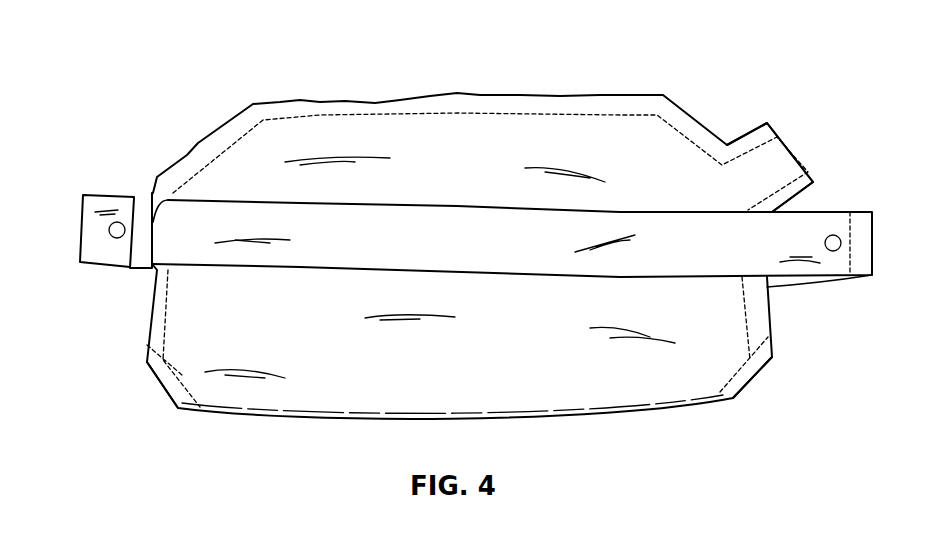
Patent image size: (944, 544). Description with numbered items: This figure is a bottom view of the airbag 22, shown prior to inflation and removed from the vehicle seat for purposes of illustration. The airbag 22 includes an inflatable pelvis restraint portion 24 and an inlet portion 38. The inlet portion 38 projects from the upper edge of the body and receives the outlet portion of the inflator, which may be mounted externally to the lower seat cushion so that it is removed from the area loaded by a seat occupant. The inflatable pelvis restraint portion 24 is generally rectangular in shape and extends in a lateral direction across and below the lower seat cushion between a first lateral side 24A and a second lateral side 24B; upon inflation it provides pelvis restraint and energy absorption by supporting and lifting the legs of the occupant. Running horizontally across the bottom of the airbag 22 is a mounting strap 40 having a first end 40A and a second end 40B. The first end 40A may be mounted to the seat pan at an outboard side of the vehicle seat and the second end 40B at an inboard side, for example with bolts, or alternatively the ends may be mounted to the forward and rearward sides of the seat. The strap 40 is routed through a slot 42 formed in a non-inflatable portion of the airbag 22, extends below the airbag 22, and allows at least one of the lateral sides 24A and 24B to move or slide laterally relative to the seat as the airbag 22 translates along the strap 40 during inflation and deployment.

The airbag 22 is at (222, 62).
The inflatable pelvis restraint portion 24 is at (314, 98).
The first lateral side 24A is at (728, 400).
The second lateral side 24B is at (160, 380).
The inlet portion 38 is at (743, 133).
The mounting strap 40 is at (457, 265).
The first end 40A is at (825, 212).
The second end 40B is at (90, 195).
The slot 42 is at (163, 200).